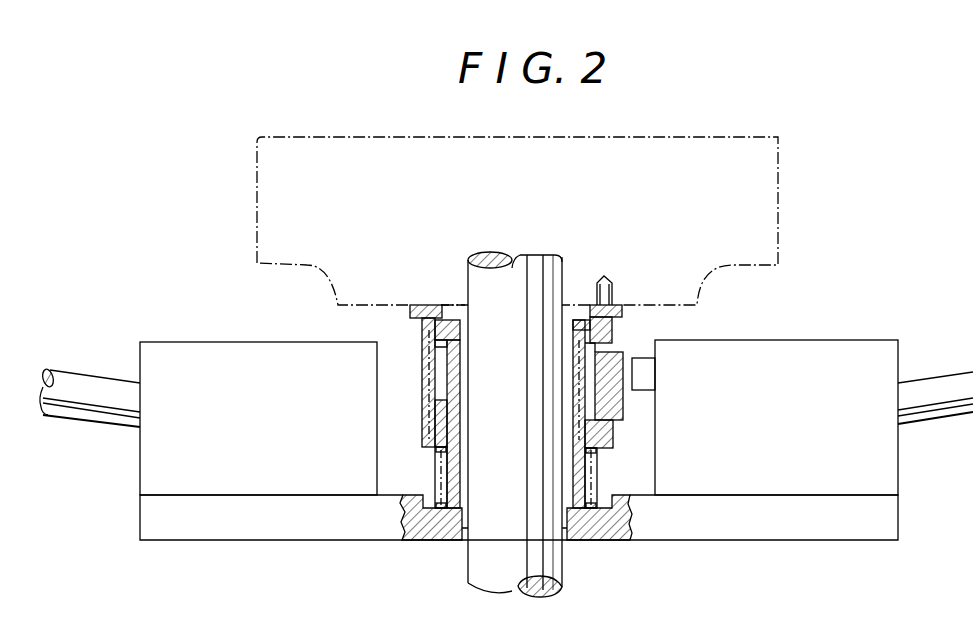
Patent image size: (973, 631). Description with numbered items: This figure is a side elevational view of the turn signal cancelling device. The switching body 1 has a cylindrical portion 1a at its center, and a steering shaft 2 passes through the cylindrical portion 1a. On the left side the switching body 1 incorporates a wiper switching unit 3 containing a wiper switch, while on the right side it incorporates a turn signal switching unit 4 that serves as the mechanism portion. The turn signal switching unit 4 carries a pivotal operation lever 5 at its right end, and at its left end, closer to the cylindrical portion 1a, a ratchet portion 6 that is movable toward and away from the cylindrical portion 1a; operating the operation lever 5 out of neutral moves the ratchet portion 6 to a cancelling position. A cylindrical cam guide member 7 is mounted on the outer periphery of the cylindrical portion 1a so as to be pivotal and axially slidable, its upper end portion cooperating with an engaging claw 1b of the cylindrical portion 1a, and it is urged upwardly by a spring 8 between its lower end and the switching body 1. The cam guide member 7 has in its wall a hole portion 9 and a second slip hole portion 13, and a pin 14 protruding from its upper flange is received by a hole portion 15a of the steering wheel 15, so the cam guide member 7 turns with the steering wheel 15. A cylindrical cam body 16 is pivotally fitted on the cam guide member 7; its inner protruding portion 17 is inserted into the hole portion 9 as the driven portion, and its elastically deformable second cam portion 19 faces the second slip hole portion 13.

The switching body 1 is at (708, 530).
The cylindrical portion 1a is at (437, 412).
The engaging claw 1b is at (449, 280).
The steering shaft 2 is at (512, 281).
The wiper switching unit 3 is at (215, 343).
The turn signal switching unit 4 is at (860, 343).
The operation lever 5 is at (937, 380).
The ratchet portion 6 is at (645, 358).
The cam guide member 7 is at (602, 448).
The spring 8 is at (600, 500).
The hole portion 9 is at (420, 412).
The second slip hole portion 13 is at (593, 372).
The pin 14 is at (595, 298).
The steering wheel 15 is at (779, 205).
The hole portion 15a is at (610, 282).
The cylindrical cam body 16 is at (422, 383).
The protruding portion 17 is at (422, 410).
The second cam portion 19 is at (615, 407).